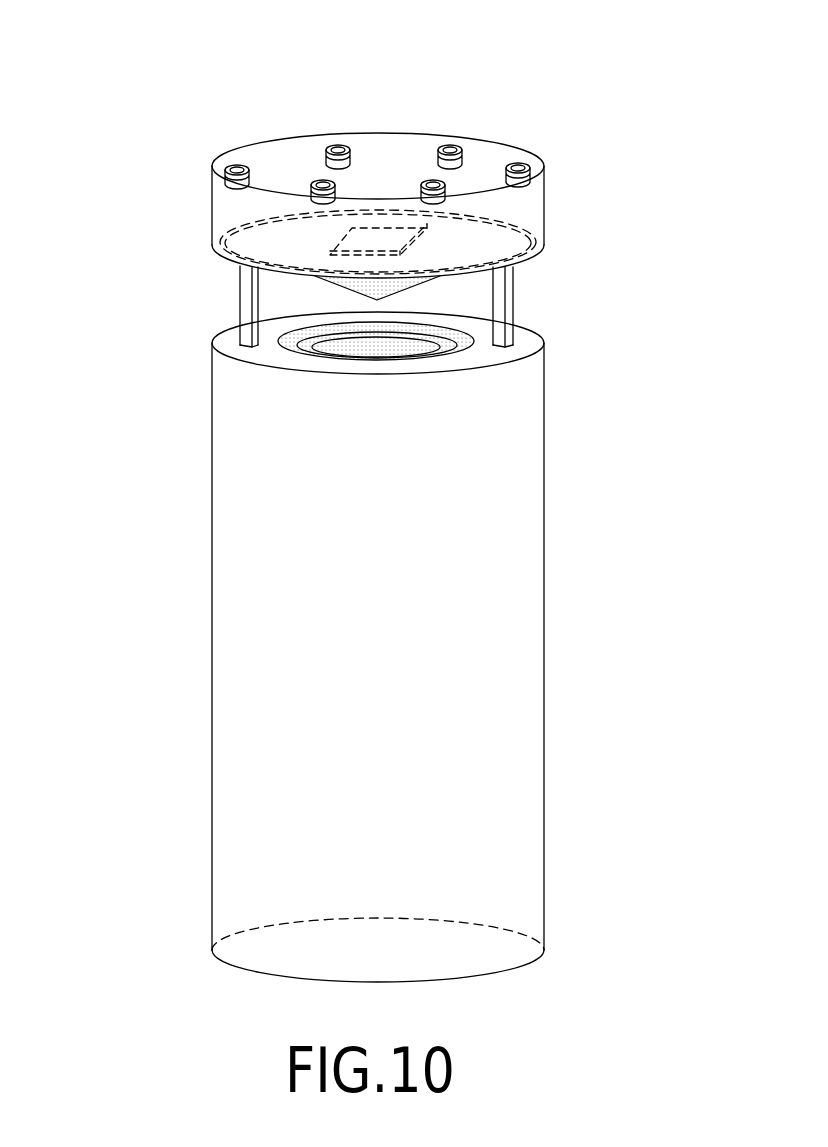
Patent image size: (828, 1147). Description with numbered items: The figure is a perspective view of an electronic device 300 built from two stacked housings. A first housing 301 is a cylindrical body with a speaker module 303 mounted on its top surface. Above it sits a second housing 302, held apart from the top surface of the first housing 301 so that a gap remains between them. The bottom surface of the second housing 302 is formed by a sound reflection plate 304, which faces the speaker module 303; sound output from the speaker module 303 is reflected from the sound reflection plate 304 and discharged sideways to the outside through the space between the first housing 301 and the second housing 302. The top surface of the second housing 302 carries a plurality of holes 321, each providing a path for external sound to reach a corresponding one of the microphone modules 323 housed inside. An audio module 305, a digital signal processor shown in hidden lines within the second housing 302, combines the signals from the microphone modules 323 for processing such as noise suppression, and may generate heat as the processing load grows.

The electronic device 300 is at (152, 76).
The first housing 301 is at (543, 643).
The second housing 302 is at (545, 204).
The speaker module 303 is at (293, 348).
The sound reflection plate 304 is at (393, 285).
The audio module 305 is at (343, 240).
The holes 321 is at (236, 165).
The microphone modules 323 is at (352, 153).